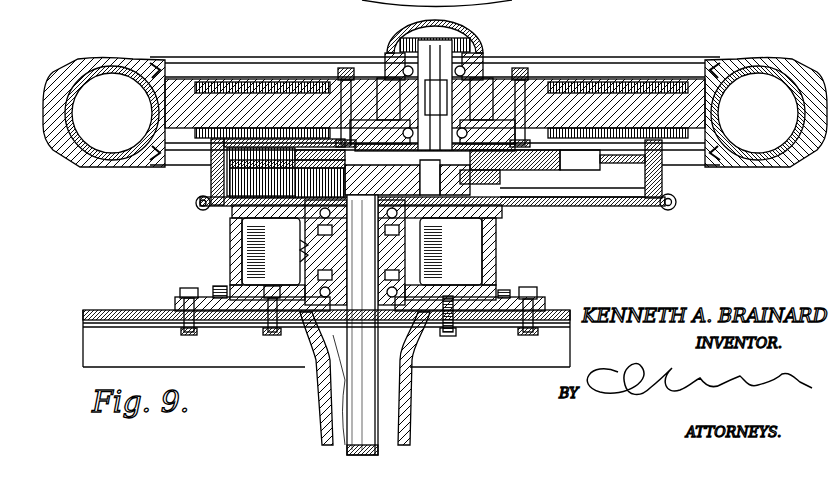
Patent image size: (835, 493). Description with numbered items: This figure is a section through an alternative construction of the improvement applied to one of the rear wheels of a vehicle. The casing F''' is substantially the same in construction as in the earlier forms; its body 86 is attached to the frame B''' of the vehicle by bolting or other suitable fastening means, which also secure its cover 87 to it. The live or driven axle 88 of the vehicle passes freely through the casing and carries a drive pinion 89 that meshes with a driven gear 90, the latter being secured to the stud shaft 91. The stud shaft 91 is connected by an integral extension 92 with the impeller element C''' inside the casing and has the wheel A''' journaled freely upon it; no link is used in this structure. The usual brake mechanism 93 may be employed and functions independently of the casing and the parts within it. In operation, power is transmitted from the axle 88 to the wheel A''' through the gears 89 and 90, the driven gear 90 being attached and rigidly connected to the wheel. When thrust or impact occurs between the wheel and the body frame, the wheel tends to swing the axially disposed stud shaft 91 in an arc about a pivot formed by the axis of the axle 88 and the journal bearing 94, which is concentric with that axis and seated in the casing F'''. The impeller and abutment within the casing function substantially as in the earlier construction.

The body 86 is at (230, 248).
The cover 87 is at (250, 300).
The live or driven axle 88 is at (350, 412).
The drive pinion 89 is at (333, 172).
The driven gear 90 is at (470, 176).
The stud shaft 91 is at (442, 108).
The integral extension 92 is at (428, 190).
The brake mechanism 93 is at (664, 182).
The journal bearing 94 is at (395, 225).
The wheel A''' is at (435, 93).
The frame B''' is at (326, 362).
The impeller element C''' is at (218, 265).
The casing F''' is at (492, 259).